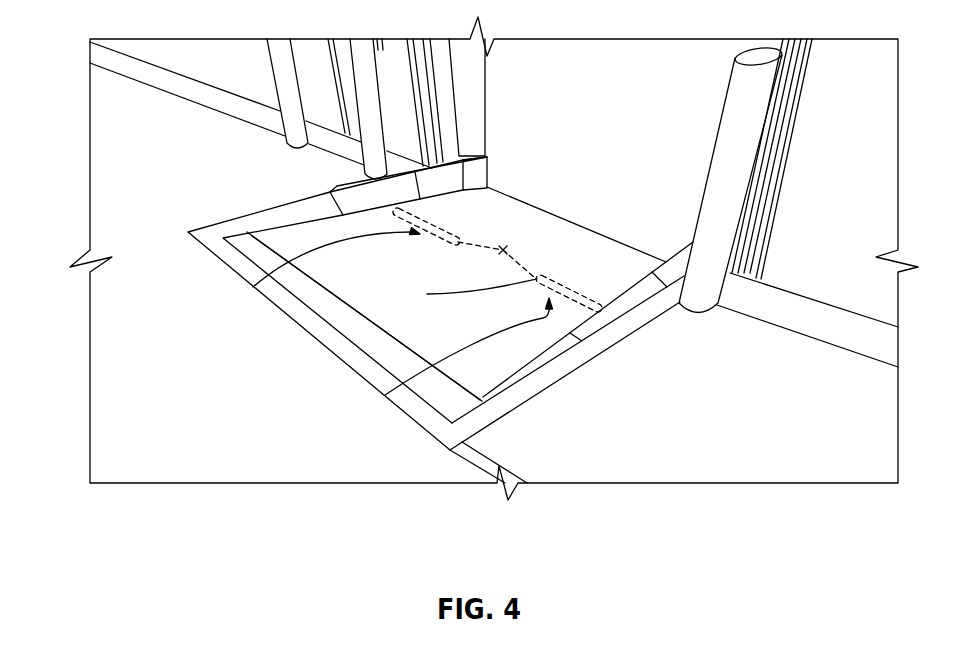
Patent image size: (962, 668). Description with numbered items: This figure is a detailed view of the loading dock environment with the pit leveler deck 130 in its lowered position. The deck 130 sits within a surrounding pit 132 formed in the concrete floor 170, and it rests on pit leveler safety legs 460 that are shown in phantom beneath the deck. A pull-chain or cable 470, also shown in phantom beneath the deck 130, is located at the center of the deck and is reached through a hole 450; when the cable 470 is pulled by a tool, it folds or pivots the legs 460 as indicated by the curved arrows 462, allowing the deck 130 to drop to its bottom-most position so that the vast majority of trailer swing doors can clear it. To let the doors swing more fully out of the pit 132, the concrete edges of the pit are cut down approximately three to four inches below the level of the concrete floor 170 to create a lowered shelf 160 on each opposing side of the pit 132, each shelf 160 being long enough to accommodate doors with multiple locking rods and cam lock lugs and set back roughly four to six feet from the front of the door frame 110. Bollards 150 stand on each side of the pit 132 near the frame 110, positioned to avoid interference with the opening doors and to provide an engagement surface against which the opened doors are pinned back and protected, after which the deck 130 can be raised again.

The door frame 110 is at (448, 83).
The pit leveler deck 130 is at (519, 348).
The pit 132 is at (508, 391).
The bollard 150 is at (379, 130).
The lowered shelf 160 is at (360, 193).
The concrete floor 170 is at (712, 415).
The hole 450 is at (509, 240).
The pit leveler safety legs 460 is at (443, 243).
The curved arrows 462 is at (253, 286).
The pull-chain or cable 470 is at (476, 248).